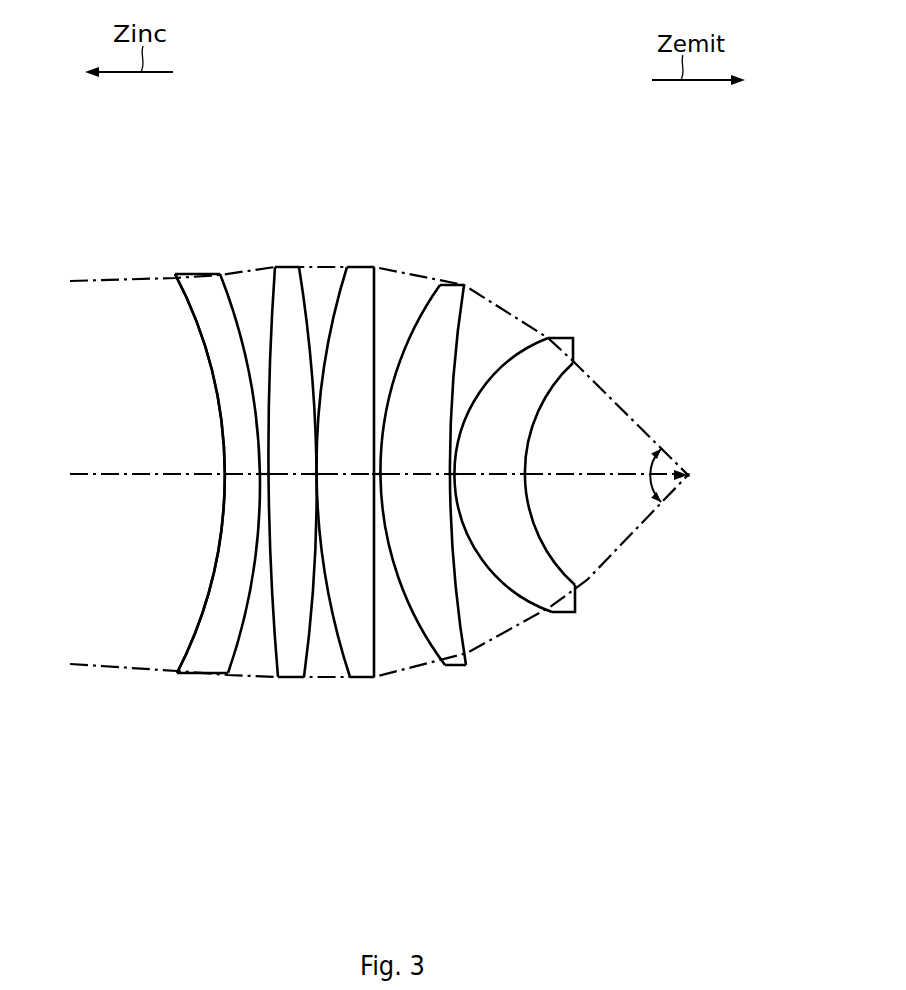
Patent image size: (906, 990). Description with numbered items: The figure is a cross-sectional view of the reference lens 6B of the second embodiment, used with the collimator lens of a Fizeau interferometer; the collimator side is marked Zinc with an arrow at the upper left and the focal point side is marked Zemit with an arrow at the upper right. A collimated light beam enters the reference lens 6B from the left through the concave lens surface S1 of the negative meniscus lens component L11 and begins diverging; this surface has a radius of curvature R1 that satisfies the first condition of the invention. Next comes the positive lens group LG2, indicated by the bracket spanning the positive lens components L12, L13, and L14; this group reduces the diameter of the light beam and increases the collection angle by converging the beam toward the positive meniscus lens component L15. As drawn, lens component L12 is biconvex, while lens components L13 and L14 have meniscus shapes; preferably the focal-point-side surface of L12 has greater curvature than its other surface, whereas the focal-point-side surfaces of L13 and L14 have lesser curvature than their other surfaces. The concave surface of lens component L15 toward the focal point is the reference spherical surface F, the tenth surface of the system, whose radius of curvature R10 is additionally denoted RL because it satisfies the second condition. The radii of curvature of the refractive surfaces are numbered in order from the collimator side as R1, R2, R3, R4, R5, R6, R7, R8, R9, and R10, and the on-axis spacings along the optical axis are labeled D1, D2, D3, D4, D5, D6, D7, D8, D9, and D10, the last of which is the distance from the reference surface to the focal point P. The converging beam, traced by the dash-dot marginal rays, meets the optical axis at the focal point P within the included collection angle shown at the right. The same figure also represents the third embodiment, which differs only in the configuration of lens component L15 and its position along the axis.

The reference lens 6B is at (642, 230).
The positive lens group LG2 is at (477, 198).
The negative meniscus lens component L11 is at (199, 277).
The positive lens component L12 is at (284, 270).
The positive lens component L13 is at (357, 270).
The positive lens component L14 is at (450, 288).
The positive meniscus lens component L15 is at (563, 340).
The radius of curvature R1 is at (184, 664).
The radius of curvature R2 is at (226, 666).
The radius of curvature R3 is at (279, 674).
The radius of curvature R4 is at (297, 668).
The radius of curvature R5 is at (352, 675).
The radius of curvature R6 is at (388, 676).
The radius of curvature R7 is at (447, 663).
The radius of curvature R8 is at (487, 655).
The radius of curvature R9 is at (528, 610).
The radius of curvature R10 is at (559, 584).
The on-axis surface spacing D1 is at (242, 460).
The on-axis surface spacing D2 is at (261, 484).
The on-axis surface spacing D3 is at (293, 460).
The on-axis surface spacing D4 is at (314, 484).
The on-axis surface spacing D5 is at (347, 460).
The on-axis surface spacing D6 is at (372, 484).
The on-axis surface spacing D7 is at (416, 460).
The on-axis surface spacing D8 is at (449, 484).
The on-axis surface spacing D9 is at (491, 460).
The on-axis surface spacing D10 is at (601, 460).
The concave lens surface S1 is at (210, 557).
The reference spherical surface F is at (540, 522).
The focal point P is at (690, 472).